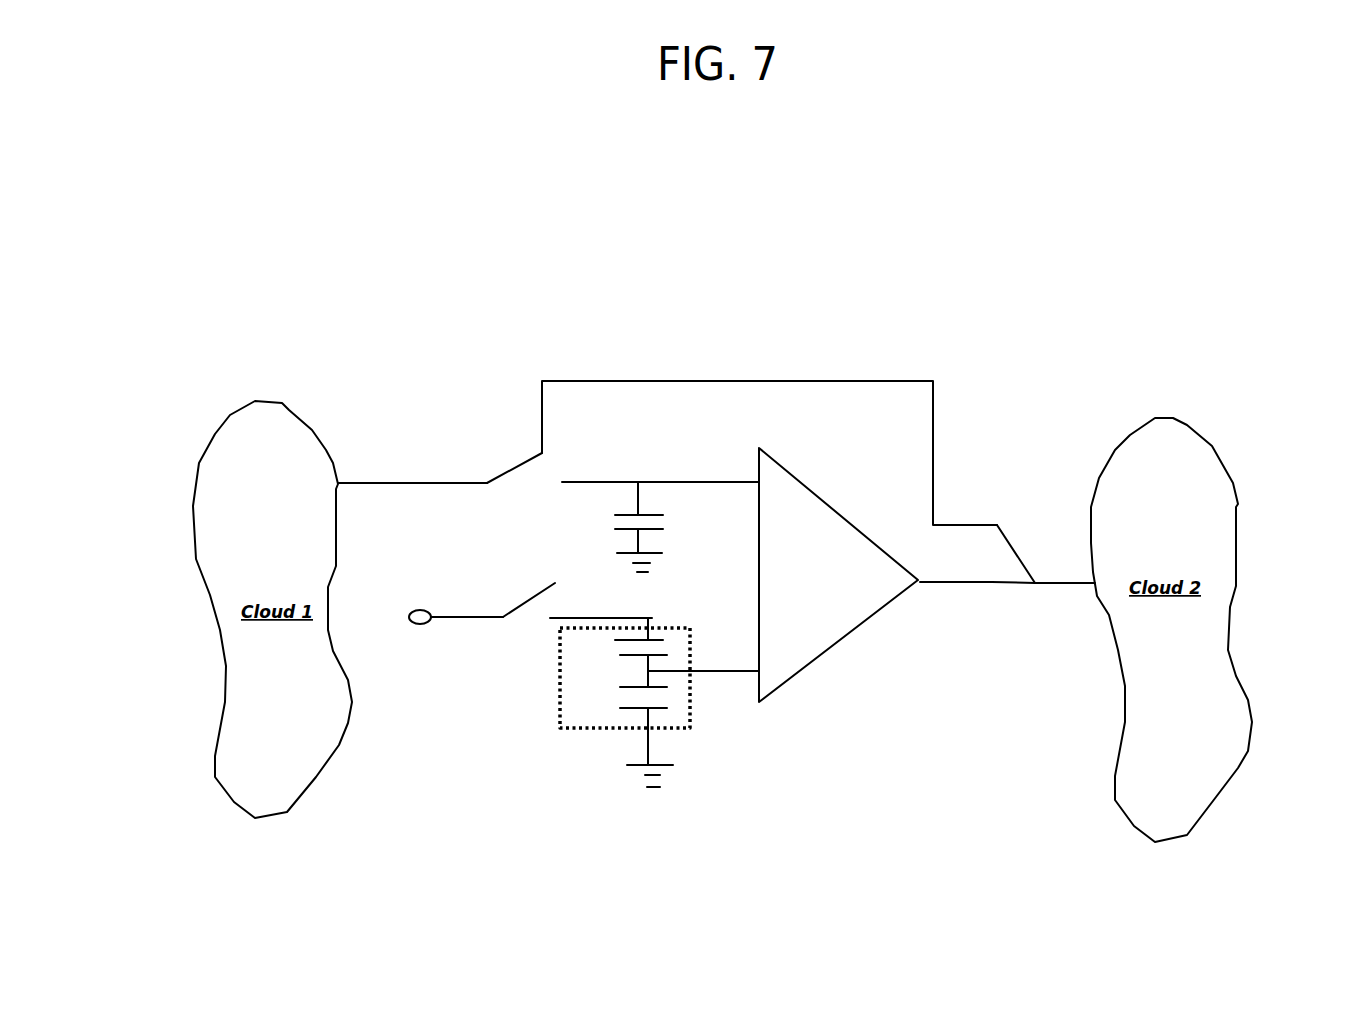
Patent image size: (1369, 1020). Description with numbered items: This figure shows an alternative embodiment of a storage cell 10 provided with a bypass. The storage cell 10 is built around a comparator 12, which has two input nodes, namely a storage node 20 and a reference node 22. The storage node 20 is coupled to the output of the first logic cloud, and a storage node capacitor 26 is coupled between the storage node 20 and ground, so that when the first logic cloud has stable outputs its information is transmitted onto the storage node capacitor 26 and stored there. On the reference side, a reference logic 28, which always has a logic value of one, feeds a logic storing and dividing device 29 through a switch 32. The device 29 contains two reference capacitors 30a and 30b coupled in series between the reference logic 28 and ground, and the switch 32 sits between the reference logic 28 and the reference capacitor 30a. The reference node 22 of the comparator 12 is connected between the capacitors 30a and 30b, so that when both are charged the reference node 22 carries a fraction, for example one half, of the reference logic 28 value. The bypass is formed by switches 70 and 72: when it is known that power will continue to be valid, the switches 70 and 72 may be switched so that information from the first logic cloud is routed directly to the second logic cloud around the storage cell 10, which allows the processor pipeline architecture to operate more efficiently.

The storage cell 10 is at (820, 357).
The comparator 12 is at (875, 575).
The storage node 20 is at (727, 480).
The reference node 22 is at (730, 670).
The storage node capacitor 26 is at (619, 527).
The reference logic 28 is at (420, 624).
The logic storing and dividing device 29 is at (532, 702).
The reference capacitor 30a is at (618, 663).
The reference capacitor 30b is at (620, 699).
The switch 32 is at (517, 597).
The switch 70 is at (508, 463).
The switch 72 is at (1028, 552).